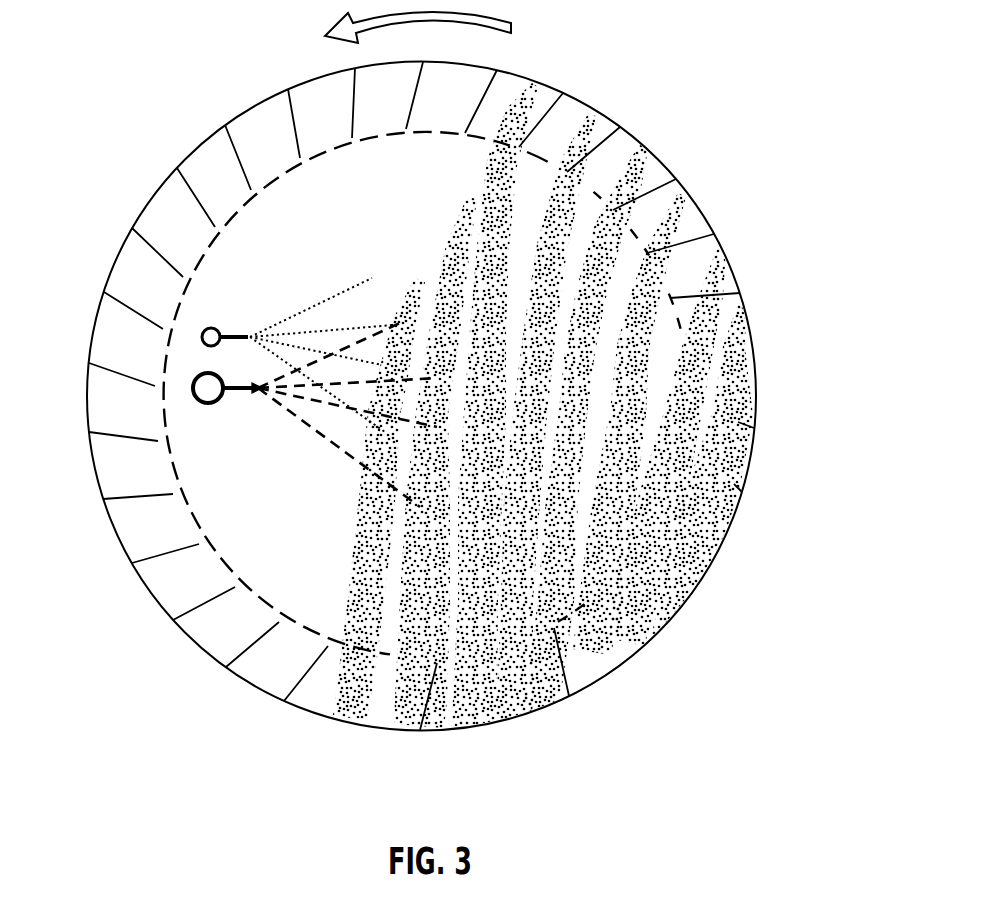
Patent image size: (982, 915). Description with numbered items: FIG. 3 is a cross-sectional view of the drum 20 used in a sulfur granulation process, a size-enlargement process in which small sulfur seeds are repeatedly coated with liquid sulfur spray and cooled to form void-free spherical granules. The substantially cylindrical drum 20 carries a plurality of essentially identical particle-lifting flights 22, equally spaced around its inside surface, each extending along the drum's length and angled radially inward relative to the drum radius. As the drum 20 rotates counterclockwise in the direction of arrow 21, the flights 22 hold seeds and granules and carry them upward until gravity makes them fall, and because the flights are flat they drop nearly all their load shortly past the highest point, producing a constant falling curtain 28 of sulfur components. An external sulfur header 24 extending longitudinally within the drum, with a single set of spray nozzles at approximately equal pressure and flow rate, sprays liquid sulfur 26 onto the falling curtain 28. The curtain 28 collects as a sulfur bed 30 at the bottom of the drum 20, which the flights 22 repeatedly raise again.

The drum 20 is at (773, 97).
The arrow 21 is at (511, 28).
The particle-lifting flights 22 is at (290, 108).
The sulfur header 24 is at (203, 401).
The liquid sulfur 26 is at (368, 472).
The falling curtain 28 is at (387, 550).
The sulfur bed 30 is at (573, 663).